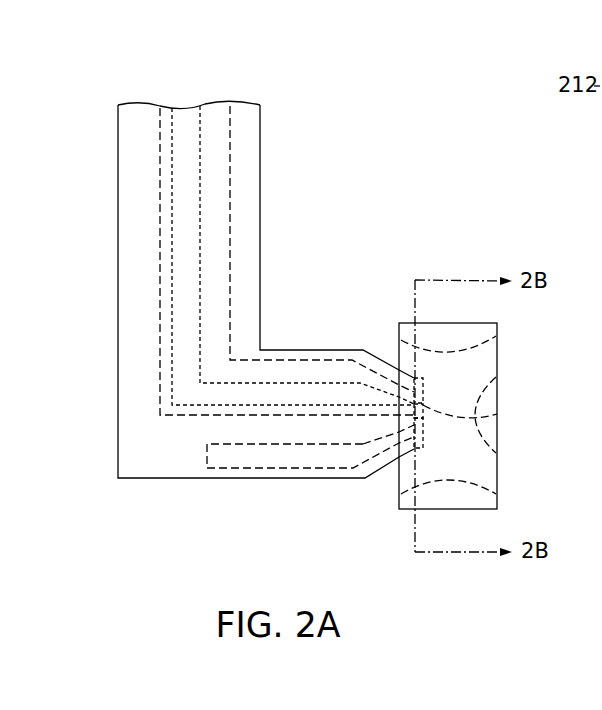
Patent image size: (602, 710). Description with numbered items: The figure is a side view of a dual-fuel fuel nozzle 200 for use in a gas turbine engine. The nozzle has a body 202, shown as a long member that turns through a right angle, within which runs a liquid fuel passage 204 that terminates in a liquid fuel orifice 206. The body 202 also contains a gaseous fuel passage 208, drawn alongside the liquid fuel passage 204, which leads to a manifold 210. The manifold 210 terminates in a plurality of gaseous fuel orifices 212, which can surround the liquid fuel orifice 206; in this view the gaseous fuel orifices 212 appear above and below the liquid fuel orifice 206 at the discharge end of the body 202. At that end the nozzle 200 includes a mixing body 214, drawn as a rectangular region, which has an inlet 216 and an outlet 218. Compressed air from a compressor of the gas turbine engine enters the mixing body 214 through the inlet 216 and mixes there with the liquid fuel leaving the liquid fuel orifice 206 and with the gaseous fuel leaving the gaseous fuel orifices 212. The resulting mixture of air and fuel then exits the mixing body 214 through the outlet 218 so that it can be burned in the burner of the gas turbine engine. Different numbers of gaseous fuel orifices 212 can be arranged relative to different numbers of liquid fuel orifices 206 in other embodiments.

The dual-fuel fuel nozzle 200 is at (296, 184).
The body 202 is at (118, 257).
The liquid fuel passage 204 is at (163, 108).
The liquid fuel orifice 206 is at (497, 414).
The gaseous fuel passage 208 is at (222, 113).
The manifold 210 is at (282, 373).
The gaseous fuel orifices 212 is at (425, 398).
The mixing body 214 is at (453, 431).
The inlet 216 is at (398, 345).
The outlet 218 is at (504, 341).